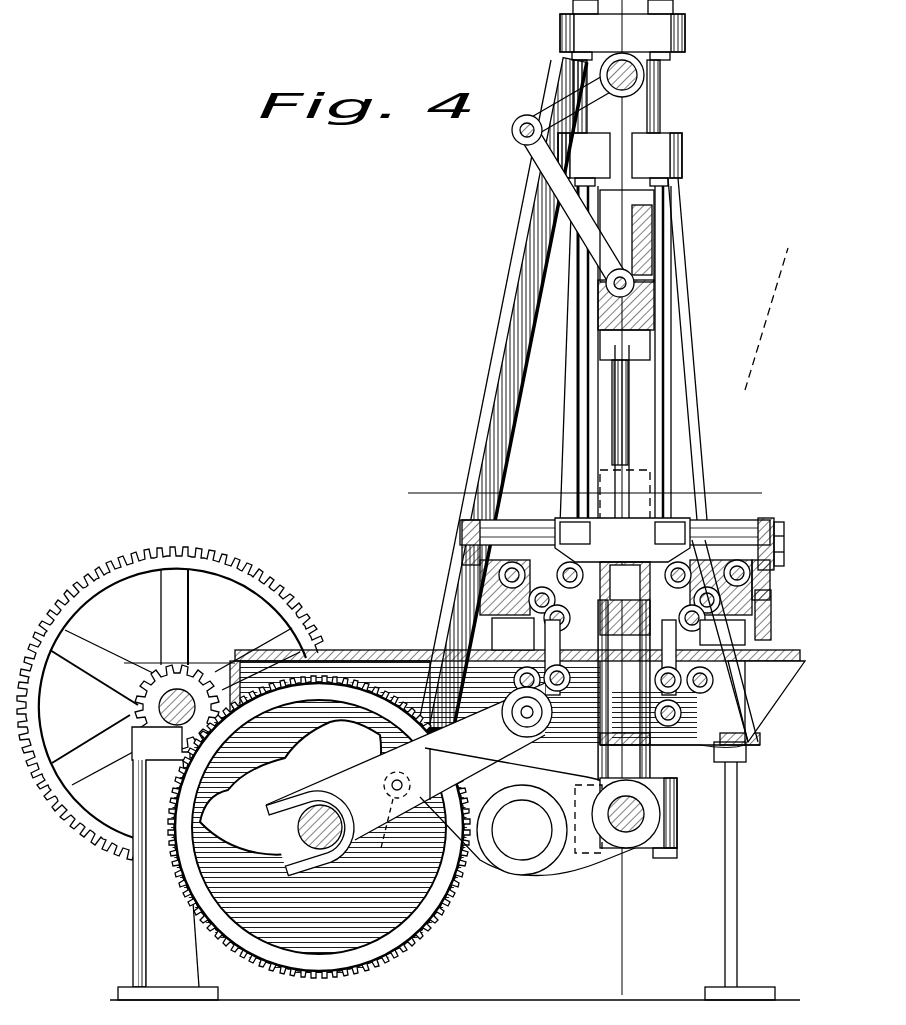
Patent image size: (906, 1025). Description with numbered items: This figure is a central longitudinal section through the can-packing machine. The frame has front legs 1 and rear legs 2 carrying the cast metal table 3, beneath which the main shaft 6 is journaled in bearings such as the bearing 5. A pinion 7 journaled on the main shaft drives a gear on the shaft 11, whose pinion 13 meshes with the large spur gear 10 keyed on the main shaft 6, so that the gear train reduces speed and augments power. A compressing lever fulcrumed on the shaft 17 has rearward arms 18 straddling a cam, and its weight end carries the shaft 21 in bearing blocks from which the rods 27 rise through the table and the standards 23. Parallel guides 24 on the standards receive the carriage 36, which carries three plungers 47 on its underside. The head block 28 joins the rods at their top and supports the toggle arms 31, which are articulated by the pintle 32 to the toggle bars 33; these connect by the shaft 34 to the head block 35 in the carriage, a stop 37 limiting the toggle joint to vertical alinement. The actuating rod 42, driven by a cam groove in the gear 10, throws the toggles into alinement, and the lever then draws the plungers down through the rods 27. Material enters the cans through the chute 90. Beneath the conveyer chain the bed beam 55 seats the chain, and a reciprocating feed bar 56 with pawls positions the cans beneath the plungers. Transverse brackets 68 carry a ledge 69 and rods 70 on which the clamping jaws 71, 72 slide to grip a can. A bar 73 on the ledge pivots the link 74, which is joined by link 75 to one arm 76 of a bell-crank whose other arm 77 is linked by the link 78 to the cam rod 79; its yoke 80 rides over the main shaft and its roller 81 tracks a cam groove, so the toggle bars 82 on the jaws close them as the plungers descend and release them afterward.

The front legs 1 is at (716, 916).
The rear legs 2 is at (166, 843).
The table 3 is at (326, 655).
The bearing 5 is at (418, 483).
The main shaft 6 is at (124, 652).
The pinion 7 is at (606, 31).
The spur gear 10 is at (378, 950).
The shaft 11 is at (168, 697).
The pinion 13 is at (194, 674).
The shaft 17 is at (533, 846).
The arms 18 is at (568, 865).
The shaft 21 is at (620, 832).
The standards 23 is at (561, 433).
The guides 24 is at (566, 393).
The rods 27 is at (582, 328).
The head block 28 is at (683, 36).
The toggle arms 31 is at (557, 110).
The pintle 32 is at (530, 116).
The toggle bars 33 is at (557, 168).
The shaft 34 is at (636, 281).
The head block 35 is at (656, 298).
The carriage 36 is at (660, 245).
The stop 37 is at (666, 205).
The actuating rod 42 is at (498, 446).
The plungers 47 is at (640, 389).
The bed beam 55 is at (748, 641).
The feed bar 56 is at (748, 741).
The brackets 68 is at (470, 549).
The ledge 69 is at (770, 621).
The rods 70 is at (769, 526).
The clamping jaw 71 is at (690, 520).
The clamping jaw 72 is at (596, 560).
The bar 73 is at (492, 577).
The link 74 is at (507, 574).
The link 75 is at (558, 641).
The bell-crank arm 76 is at (450, 661).
The bell-crank arm 77 is at (431, 688).
The link 78 is at (665, 732).
The cam rod 79 is at (426, 690).
The yoke 80 is at (306, 858).
The anti-friction roller 81 is at (409, 779).
The toggle bar 82 is at (541, 540).
The chute 90 is at (735, 395).